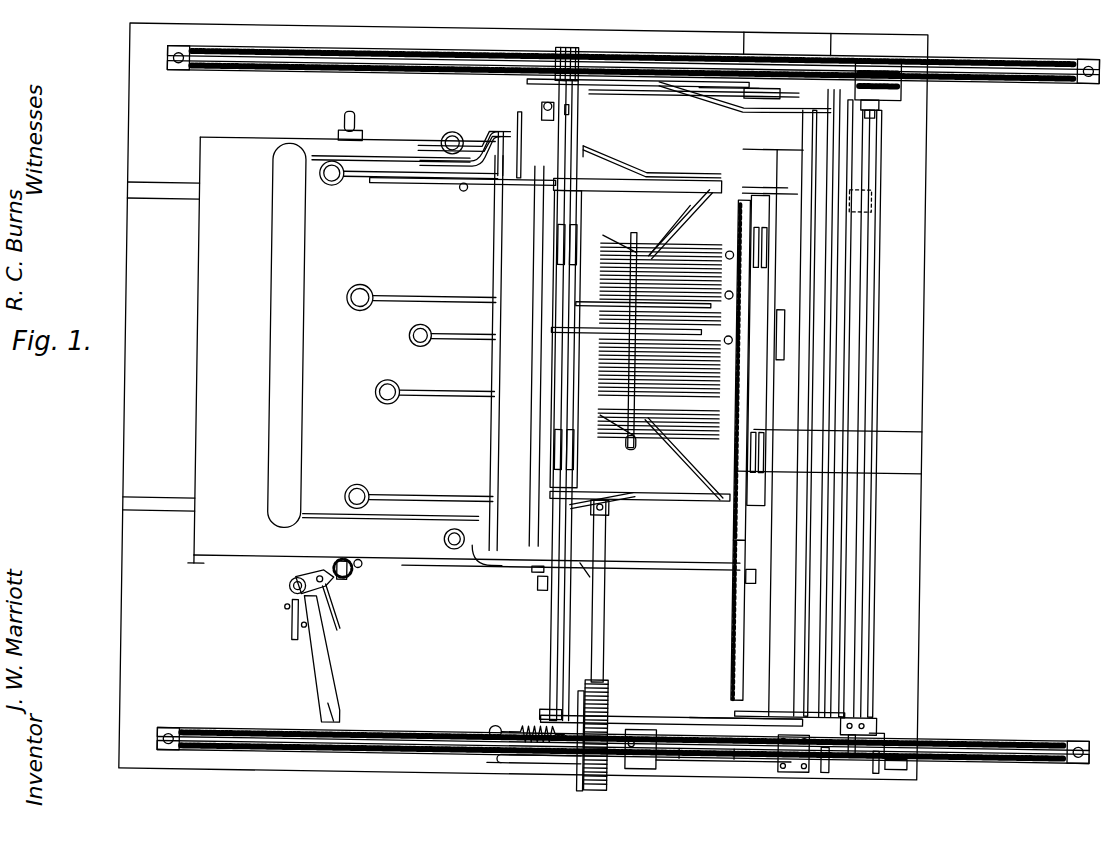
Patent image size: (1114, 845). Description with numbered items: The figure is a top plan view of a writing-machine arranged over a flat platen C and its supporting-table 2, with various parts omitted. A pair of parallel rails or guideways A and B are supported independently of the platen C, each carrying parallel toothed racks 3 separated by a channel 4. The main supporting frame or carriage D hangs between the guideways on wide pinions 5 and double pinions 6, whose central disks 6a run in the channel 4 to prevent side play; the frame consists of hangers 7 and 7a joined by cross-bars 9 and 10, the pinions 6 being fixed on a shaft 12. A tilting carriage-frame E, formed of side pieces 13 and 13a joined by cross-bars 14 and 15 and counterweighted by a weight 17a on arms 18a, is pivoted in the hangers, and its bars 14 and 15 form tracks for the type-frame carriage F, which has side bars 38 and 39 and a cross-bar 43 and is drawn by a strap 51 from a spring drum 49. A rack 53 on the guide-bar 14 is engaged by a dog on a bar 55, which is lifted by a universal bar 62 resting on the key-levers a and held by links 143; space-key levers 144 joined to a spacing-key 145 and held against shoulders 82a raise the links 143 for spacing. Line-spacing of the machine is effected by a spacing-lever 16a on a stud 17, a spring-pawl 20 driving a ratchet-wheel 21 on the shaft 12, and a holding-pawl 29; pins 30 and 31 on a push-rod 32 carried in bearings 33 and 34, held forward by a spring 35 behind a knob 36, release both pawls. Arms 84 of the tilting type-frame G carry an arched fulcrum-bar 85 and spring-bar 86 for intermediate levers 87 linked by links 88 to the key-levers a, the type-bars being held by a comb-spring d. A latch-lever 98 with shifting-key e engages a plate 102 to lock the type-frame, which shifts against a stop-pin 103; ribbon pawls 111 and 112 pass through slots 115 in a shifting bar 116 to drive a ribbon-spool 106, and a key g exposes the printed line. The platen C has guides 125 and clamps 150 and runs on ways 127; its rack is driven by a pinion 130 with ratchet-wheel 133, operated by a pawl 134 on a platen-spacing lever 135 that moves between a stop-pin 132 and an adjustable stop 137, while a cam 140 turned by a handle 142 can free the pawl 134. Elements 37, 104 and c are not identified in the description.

The supporting-table 2 is at (131, 545).
The toothed racks 3 is at (1043, 47).
The channel 4 is at (1055, 66).
The wide pinions 5 is at (567, 40).
The double pinions 6 is at (885, 52).
The central rib or disk 6a is at (862, 50).
The triangular side plate or hanger 7 is at (720, 90).
The triangular side plate or hanger 7a is at (882, 725).
The cross-bar 9 is at (843, 232).
The cross-bar 10 is at (815, 270).
The pinion-shaft 12 is at (870, 335).
The side piece 13 is at (638, 86).
The side piece 13a is at (670, 709).
The cross-bar or guide-bar 14 is at (756, 606).
The cross-bar or guide-bar 15 is at (572, 664).
The spacing-lever 16a is at (688, 752).
The stud 17 is at (738, 752).
The counterweight 17a is at (852, 290).
The rearwardly-extending arms 18a is at (700, 90).
The spring-pawl 20 is at (553, 43).
The ratchet-wheel 21 is at (840, 762).
The spring holding-pawl 29 is at (912, 762).
The pin or projection 30 is at (800, 762).
The pin or projection 31 is at (888, 762).
The push-rod 32 is at (658, 762).
The bearing 33 is at (620, 715).
The bearing 34 is at (872, 708).
The spring 35 is at (532, 724).
The knob 36 is at (498, 724).
The bar 37 is at (746, 690).
The side bar 38 is at (650, 184).
The side bar 39 is at (640, 497).
The cross-bar 43 is at (560, 347).
The spring-actuated drum 49 is at (580, 772).
The strap 51 is at (614, 620).
The rack 53 is at (758, 571).
The transverse vertically-movable bar 55 is at (747, 461).
The universal bar 62 is at (790, 200).
The pins or shoulders 82a is at (470, 600).
The parallel arms 84 is at (698, 217).
The arched fulcrum-bar 85 is at (630, 440).
The arched spring supporting-bar 86 is at (756, 418).
The intermediate levers 87 is at (603, 375).
The link 88 is at (705, 190).
The latch-lever 98 is at (482, 140).
The plate 102 is at (453, 160).
The adjustable stop-pin 103 is at (478, 186).
The bar 104 is at (782, 180).
The ribbon-spool 106 is at (548, 566).
The pawl 111 is at (568, 105).
The pawl 112 is at (588, 560).
The slots 115 is at (530, 108).
The ribbon-shifting bar 116 is at (546, 580).
The ledges or guides 125 is at (200, 560).
The platen guide rails or ways 127 is at (175, 186).
The pinion 130 is at (358, 574).
The stop-pin 132 is at (340, 582).
The ratchet-wheel 133 is at (370, 566).
The pawl 134 is at (300, 576).
The platen-spacing lever 135 is at (322, 668).
The adjustable stop 137 is at (296, 615).
The cam 140 is at (297, 586).
The handle 142 is at (340, 624).
The links 143 is at (632, 150).
The space-key levers 144 is at (398, 160).
The spacing-key 145 is at (290, 326).
The clamps 150 is at (350, 115).
The rail or guideway A is at (993, 49).
The rail or guideway B is at (623, 761).
The platen C is at (470, 353).
The main supporting frame or carriage D is at (755, 60).
The tilting carriage-frame E is at (582, 72).
The type-frame carriage F is at (790, 373).
The tilting type-frame G is at (512, 257).
The type-key levers a is at (412, 294).
The bracket c is at (540, 100).
The comb-spring d is at (732, 314).
The shifting-key e is at (448, 131).
The key g is at (466, 548).